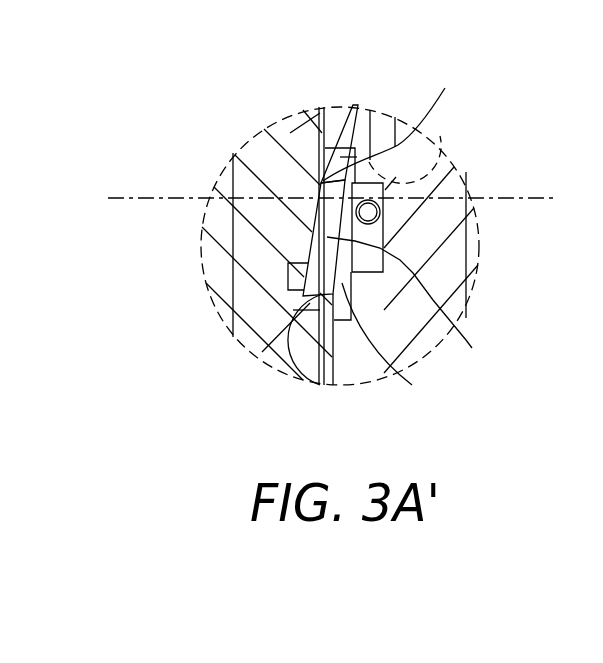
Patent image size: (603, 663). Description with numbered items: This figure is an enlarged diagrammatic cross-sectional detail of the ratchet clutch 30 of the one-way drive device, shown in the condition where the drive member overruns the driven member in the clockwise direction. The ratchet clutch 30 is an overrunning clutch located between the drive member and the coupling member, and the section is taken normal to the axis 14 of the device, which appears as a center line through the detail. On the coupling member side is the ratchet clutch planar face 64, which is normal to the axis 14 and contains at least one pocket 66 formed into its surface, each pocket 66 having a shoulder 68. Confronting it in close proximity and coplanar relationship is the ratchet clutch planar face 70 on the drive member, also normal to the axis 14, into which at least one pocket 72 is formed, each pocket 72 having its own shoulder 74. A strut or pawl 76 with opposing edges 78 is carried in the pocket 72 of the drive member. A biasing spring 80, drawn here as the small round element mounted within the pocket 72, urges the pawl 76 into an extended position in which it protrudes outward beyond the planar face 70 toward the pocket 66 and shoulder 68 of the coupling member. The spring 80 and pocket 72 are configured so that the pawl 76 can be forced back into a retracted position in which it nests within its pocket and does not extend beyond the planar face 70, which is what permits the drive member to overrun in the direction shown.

The axis 14 is at (160, 198).
The ratchet clutch 30 is at (484, 262).
The ratchet clutch planar face 64 is at (345, 387).
The pocket 66 is at (288, 288).
The shoulder 68 is at (293, 386).
The ratchet clutch planar face 70 is at (318, 140).
The pocket 72 is at (385, 372).
The shoulder 74 is at (350, 106).
The pawl 76 is at (445, 300).
The opposing edges 78 is at (445, 88).
The biasing spring 80 is at (383, 213).